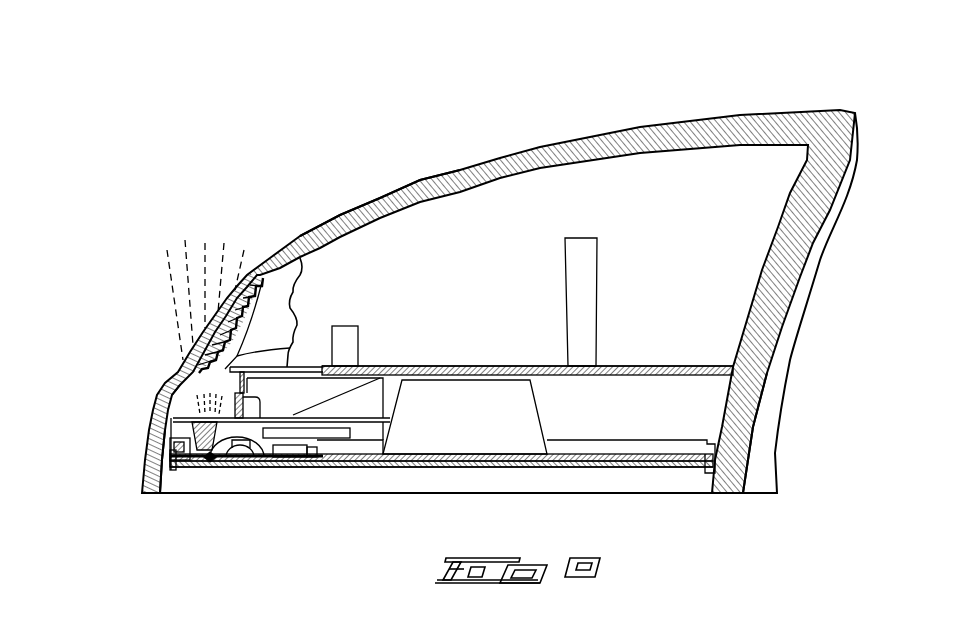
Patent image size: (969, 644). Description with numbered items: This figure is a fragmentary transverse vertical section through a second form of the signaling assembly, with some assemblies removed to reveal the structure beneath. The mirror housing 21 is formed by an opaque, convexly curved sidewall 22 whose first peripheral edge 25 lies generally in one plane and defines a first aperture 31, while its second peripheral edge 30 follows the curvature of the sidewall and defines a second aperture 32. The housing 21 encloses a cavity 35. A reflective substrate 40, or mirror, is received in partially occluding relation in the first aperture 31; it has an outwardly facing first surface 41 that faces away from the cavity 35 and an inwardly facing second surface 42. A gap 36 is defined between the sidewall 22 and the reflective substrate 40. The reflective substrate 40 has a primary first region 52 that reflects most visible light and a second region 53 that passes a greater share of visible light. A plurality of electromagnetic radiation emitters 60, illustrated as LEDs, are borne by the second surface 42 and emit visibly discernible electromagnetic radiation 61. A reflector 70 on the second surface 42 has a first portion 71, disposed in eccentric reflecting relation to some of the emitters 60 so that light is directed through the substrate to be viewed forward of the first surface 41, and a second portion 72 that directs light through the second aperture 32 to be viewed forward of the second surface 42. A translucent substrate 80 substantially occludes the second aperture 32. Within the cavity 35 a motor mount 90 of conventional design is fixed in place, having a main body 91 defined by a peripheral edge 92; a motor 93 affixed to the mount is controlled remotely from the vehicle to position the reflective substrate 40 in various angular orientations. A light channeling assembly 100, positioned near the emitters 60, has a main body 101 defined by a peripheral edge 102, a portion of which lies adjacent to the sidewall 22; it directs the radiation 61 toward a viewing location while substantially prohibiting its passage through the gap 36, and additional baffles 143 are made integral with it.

The housing 21 is at (673, 106).
The convexly curved sidewall 22 is at (497, 152).
The first peripheral edge 25 is at (148, 494).
The second peripheral edge 30 is at (273, 265).
The first aperture 31 is at (430, 489).
The second aperture 32 is at (156, 315).
The cavity 35 is at (716, 240).
The gap 36 is at (167, 470).
The reflective substrate 40 is at (580, 468).
The first surface 41 is at (633, 470).
The second surface 42 is at (612, 455).
The first region 52 is at (502, 468).
The second region 53 is at (244, 460).
The electromagnetic radiation emitters 60 is at (241, 463).
The electromagnetic radiation 61 is at (255, 334).
The reflector 70 is at (186, 431).
The first portion 71 is at (262, 431).
The second portion 72 is at (215, 424).
The translucent substrate 80 is at (230, 288).
The motor mount 90 is at (500, 362).
The main body 91 is at (449, 366).
The peripheral edge 92 is at (289, 363).
The motor 93 is at (478, 424).
The light channeling assembly 100 is at (337, 362).
The main body 101 is at (255, 379).
The peripheral edge 102 is at (184, 384).
The baffles 143 is at (293, 415).